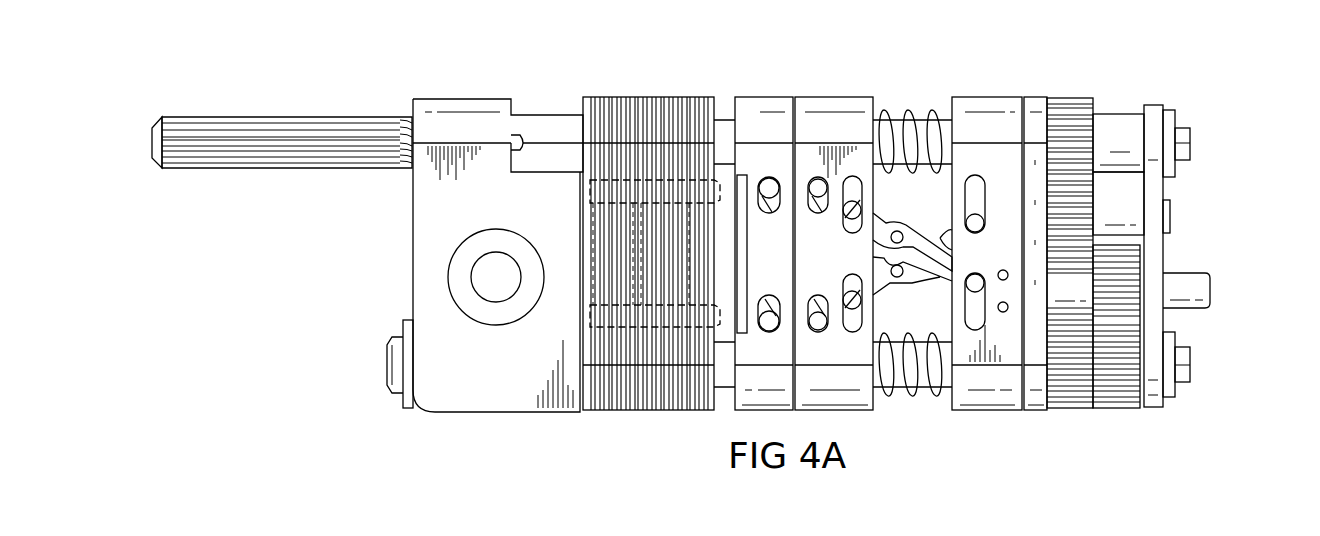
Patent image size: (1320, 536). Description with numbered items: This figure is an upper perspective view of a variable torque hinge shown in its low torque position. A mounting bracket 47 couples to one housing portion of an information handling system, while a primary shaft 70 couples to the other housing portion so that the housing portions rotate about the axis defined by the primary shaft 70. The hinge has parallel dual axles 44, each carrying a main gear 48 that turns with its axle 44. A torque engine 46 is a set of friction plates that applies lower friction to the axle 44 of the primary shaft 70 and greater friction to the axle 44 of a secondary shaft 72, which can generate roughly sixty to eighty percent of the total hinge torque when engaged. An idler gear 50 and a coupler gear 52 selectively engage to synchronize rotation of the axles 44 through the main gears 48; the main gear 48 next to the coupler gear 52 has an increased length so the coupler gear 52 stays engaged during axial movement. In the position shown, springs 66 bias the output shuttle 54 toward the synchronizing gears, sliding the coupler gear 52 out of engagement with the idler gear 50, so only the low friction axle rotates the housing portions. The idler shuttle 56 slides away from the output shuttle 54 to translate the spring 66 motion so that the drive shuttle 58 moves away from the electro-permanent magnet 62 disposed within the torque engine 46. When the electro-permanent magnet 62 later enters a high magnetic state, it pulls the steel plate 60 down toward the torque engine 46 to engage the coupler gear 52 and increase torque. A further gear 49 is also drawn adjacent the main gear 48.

The axle 44 is at (1190, 143).
The torque engine 46 is at (596, 97).
The mounting bracket 47 is at (512, 412).
The main gear 48 is at (1073, 98).
The gear 49 is at (1117, 408).
The idler gear 50 is at (1095, 186).
The coupler gear 52 is at (1145, 262).
The output shuttle 54 is at (988, 97).
The idler shuttle 56 is at (840, 97).
The drive shuttle 58 is at (770, 97).
The steel plate 60 is at (745, 180).
The electro-permanent magnet 62 is at (620, 222).
The spring 66 is at (906, 110).
The primary shaft 70 is at (280, 117).
The secondary shaft 72 is at (387, 366).